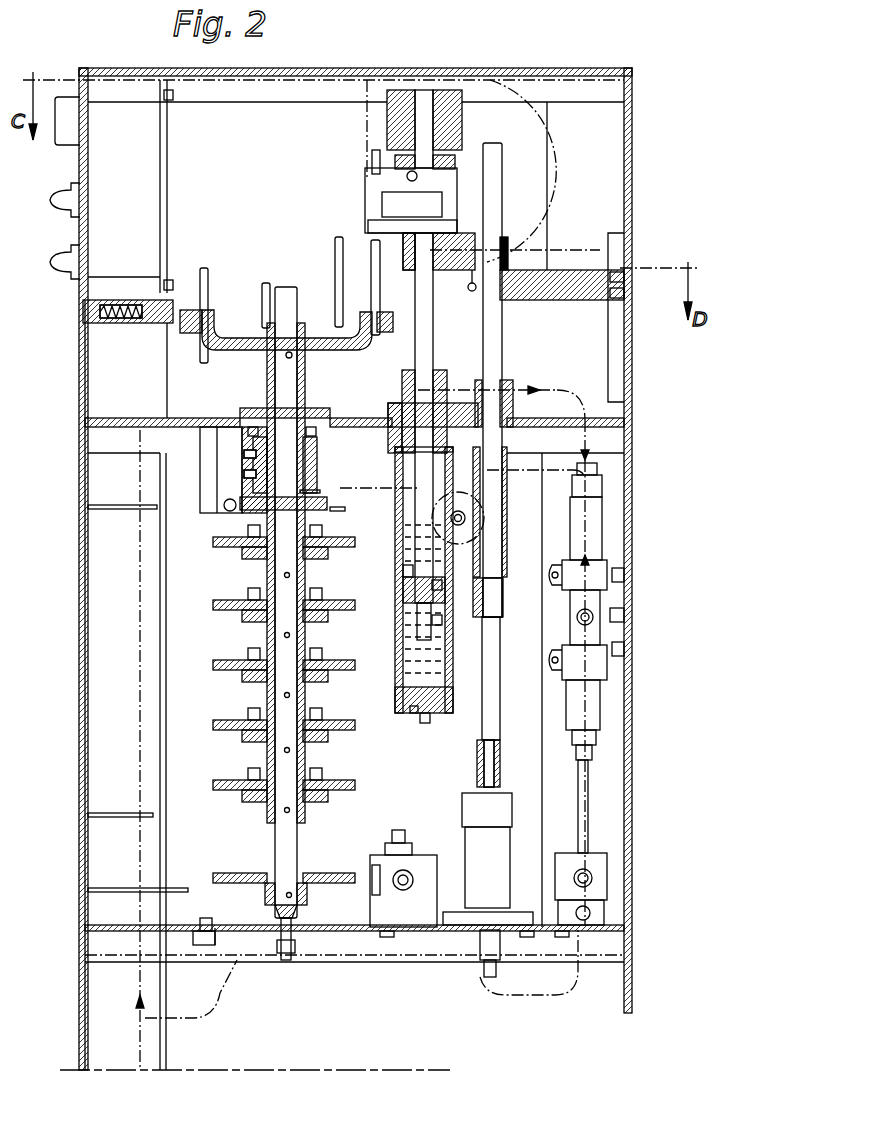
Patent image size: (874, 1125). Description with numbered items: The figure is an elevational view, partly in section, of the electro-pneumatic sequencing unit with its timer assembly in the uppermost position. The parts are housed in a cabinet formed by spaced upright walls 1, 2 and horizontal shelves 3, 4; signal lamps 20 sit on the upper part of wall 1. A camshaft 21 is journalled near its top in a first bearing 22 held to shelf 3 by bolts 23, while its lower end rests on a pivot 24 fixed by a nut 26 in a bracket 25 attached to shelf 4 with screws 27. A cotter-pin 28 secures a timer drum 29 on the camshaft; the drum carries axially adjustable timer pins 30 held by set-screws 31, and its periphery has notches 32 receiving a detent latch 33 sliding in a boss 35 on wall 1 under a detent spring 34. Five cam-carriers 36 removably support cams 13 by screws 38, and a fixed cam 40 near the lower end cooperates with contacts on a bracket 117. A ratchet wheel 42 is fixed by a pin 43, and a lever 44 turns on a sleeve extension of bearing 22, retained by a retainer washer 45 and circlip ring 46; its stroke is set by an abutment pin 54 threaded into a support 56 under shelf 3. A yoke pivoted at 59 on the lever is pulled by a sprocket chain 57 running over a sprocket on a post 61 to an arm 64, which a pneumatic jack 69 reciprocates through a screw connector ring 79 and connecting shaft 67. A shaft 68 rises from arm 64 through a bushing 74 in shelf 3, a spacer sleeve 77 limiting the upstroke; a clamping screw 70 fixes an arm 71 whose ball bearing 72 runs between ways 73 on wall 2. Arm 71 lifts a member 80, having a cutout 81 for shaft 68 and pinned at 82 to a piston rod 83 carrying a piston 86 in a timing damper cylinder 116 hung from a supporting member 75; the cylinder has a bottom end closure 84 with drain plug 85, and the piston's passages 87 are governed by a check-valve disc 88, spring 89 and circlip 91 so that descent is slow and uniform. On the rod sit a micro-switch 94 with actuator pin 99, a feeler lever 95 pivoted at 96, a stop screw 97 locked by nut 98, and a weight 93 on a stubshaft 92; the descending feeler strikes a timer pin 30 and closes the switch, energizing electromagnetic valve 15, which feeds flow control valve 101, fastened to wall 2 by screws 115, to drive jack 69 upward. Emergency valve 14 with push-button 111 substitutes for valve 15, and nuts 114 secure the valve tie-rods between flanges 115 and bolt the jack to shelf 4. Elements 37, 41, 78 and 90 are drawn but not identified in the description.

The upright wall 1 is at (88, 197).
The upright wall 2 is at (630, 200).
The shelf 3 is at (545, 420).
The shelf 4 is at (213, 927).
The cam 13 is at (220, 548).
The valve 14 is at (415, 847).
The electromagnetically operated valve 15 is at (607, 873).
The signal lamps 20 is at (62, 218).
The camshaft 21 is at (290, 285).
The first bearing 22 is at (330, 415).
The bolts 23 is at (312, 432).
The pivot 24 is at (293, 916).
The bracket 25 is at (245, 940).
The nut 26 is at (288, 955).
The screws 27 is at (200, 925).
The cotter-pin 28 is at (292, 357).
The timer drum 29 is at (345, 350).
The timer pins 30 is at (205, 270).
The set-screws 31 is at (385, 335).
The notches 32 is at (183, 336).
The detent latch 33 is at (175, 300).
The detent spring 34 is at (133, 327).
The boss 35 is at (107, 327).
The cam-carriers 36 is at (320, 565).
The hole 37 is at (287, 580).
The screws 38 is at (252, 532).
The fixed cam 40 is at (303, 880).
The hole 41 is at (290, 868).
The ratchet wheel 42 is at (325, 548).
The pin 43 is at (284, 545).
The lever 44 is at (317, 470).
The retainer washer 45 is at (317, 490).
The circlip ring 46 is at (327, 507).
The threaded abutment pin 54 is at (200, 505).
The support 56 is at (205, 470).
The sprocket chain 57 is at (347, 510).
The yoke pivot 59 is at (243, 460).
The post 61 is at (458, 512).
The arm 64 is at (505, 600).
The connecting shaft 67 is at (492, 690).
The shaft 68 is at (501, 338).
The double-acting pneumatic jack 69 is at (462, 818).
The clamping screw 70 is at (472, 292).
The arm 71 is at (565, 300).
The ball bearing 72 is at (626, 304).
The ways 73 is at (625, 363).
The bushing 74 is at (515, 400).
The supporting member 75 is at (445, 375).
The spacer sleeve 77 is at (505, 540).
The partition 78 is at (512, 446).
The screw connector ring 79 is at (498, 770).
The member 80 is at (455, 252).
The cutout 81 is at (506, 250).
The pin 82 is at (410, 268).
The piston rod 83 is at (432, 330).
The bottom end closure 84 is at (407, 713).
The drain plug 85 is at (425, 720).
The piston 86 is at (396, 565).
The passages 87 is at (407, 585).
The check-valve disc 88 is at (441, 580).
The spring 89 is at (419, 605).
The port 90 is at (432, 597).
The circlip 91 is at (437, 622).
The stubshaft 92 is at (425, 95).
The weight 93 is at (455, 95).
The micro-switch 94 is at (437, 200).
The feeler lever 95 is at (368, 228).
The pivot 96 is at (455, 230).
The adjustable stop screw 97 is at (375, 152).
The nut 98 is at (372, 172).
The actuator pin 99 is at (405, 237).
The flow control valve 101 is at (626, 615).
The push-button 111 is at (390, 842).
The nuts 114 is at (520, 935).
The flanges 115 is at (125, 507).
The timing damper cylinder 116 is at (395, 650).
The bracket 117 is at (172, 888).